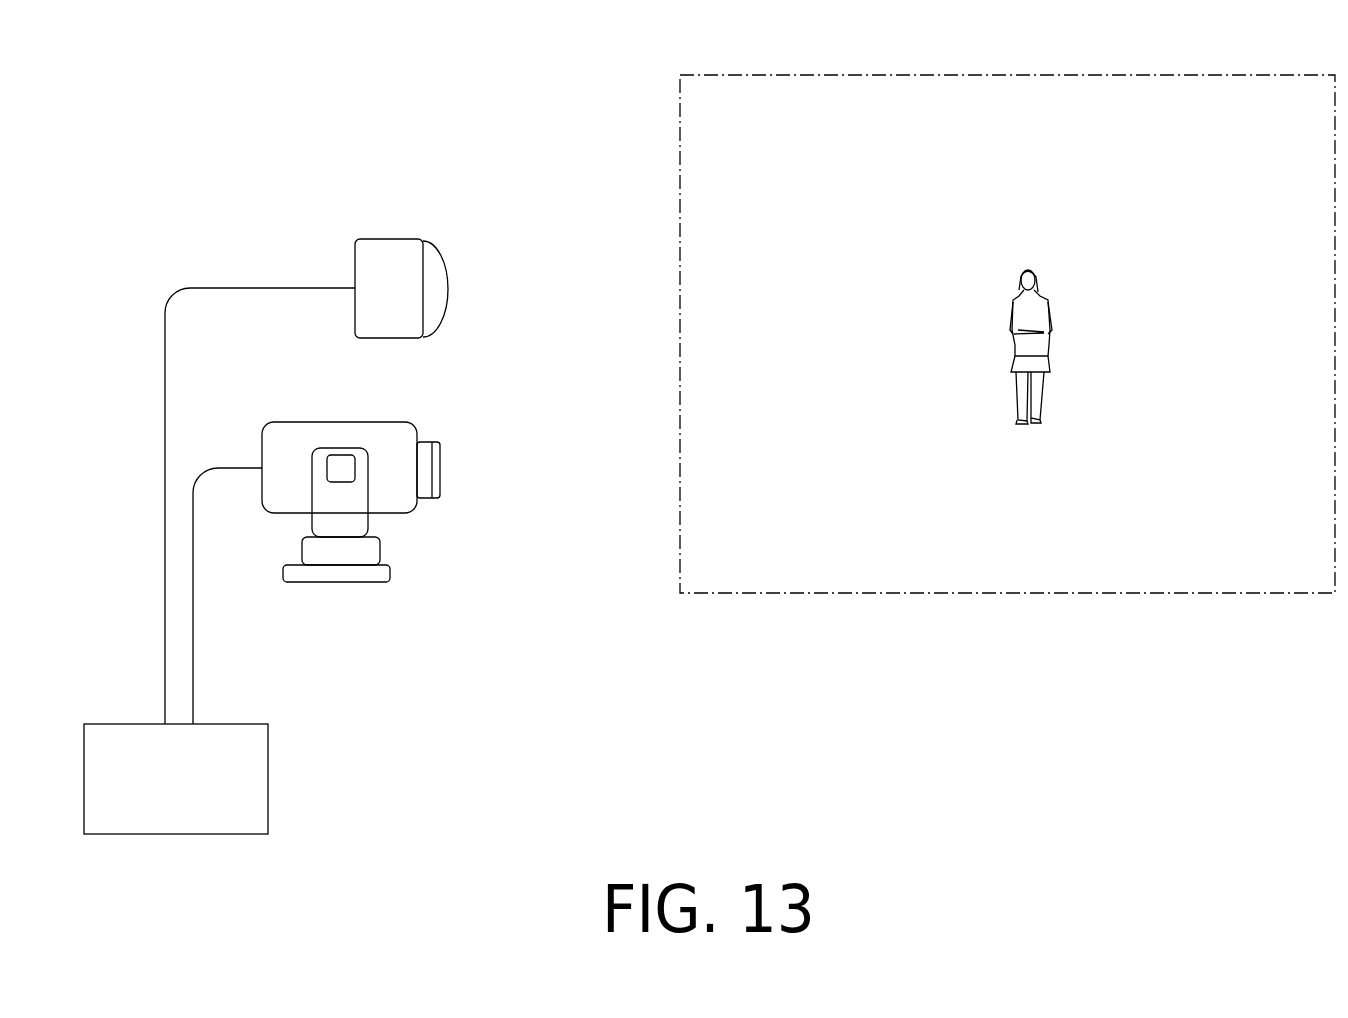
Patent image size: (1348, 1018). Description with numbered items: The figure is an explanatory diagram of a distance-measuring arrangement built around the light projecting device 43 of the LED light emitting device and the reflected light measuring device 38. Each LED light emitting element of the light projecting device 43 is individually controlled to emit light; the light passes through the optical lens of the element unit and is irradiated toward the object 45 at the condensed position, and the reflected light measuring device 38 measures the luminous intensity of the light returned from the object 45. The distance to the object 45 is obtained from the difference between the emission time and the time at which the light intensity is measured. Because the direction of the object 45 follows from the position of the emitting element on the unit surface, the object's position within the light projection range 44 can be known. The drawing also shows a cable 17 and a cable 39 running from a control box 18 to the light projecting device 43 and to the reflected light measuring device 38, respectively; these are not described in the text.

The cable 17 is at (193, 660).
The control device 18 is at (268, 770).
The reflected light measuring device 38 is at (413, 238).
The cable 39 is at (165, 385).
The light projecting device 43 is at (413, 423).
The light projection range 44 is at (842, 73).
The object 45 is at (1013, 290).